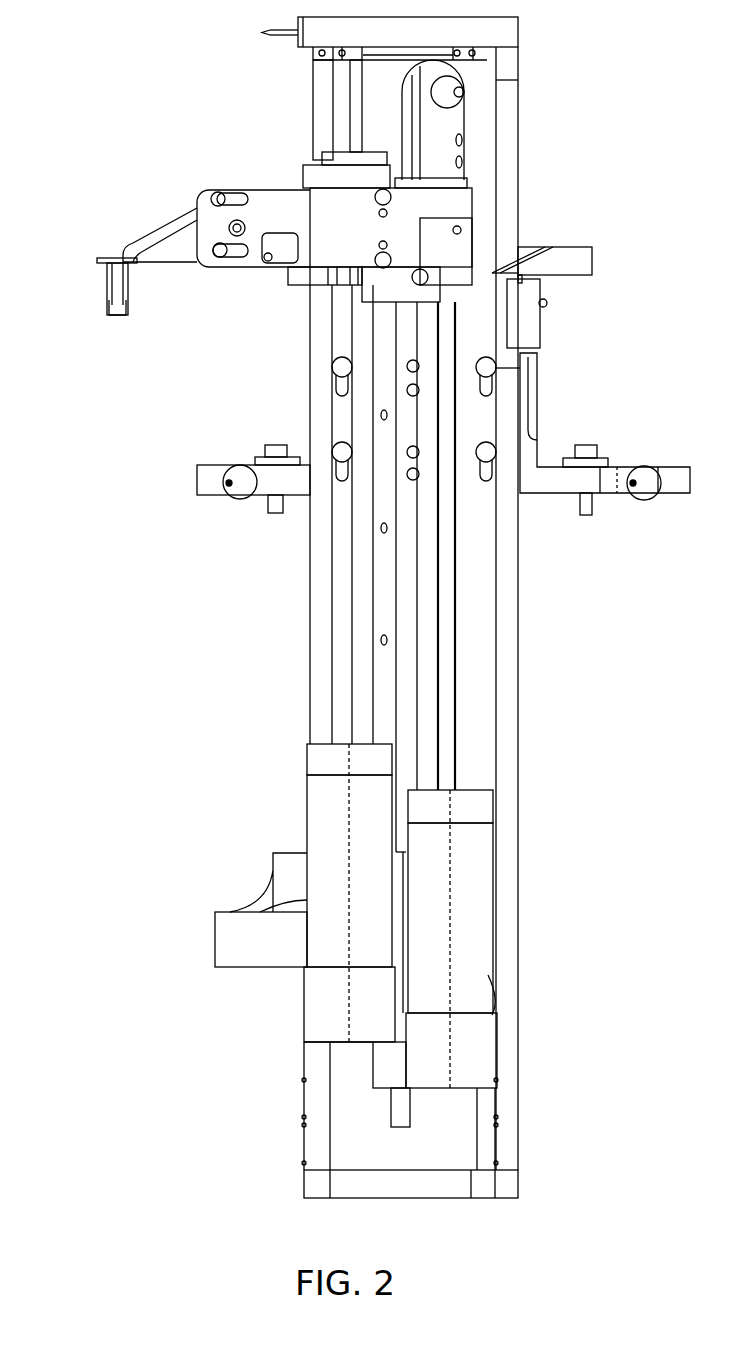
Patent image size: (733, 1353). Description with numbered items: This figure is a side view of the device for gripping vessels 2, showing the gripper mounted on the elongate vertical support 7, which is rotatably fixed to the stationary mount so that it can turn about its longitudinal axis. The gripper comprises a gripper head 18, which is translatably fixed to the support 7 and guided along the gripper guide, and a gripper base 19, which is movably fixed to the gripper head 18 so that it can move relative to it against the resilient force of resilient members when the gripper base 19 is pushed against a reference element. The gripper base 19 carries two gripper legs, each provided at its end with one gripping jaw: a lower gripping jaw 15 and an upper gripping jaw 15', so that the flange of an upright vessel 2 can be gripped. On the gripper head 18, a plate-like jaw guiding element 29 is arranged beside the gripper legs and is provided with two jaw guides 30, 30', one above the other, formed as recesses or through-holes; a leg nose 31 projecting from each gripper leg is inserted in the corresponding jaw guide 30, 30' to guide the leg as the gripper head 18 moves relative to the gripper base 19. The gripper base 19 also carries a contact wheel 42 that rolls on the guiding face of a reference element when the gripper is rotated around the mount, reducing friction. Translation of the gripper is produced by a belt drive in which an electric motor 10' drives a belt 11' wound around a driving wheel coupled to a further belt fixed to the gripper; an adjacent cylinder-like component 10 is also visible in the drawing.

The vessel 2 is at (110, 280).
The elongate vertical support 7 is at (470, 575).
The pneumatic cylinder 10 is at (494, 939).
The electric motor 10' is at (297, 893).
The belt 11' is at (498, 124).
The lower gripping jaw 15 is at (82, 229).
The upper gripping jaw 15' is at (127, 206).
The gripper head 18 is at (363, 177).
The gripper base 19 is at (333, 250).
The jaw guiding element 29 is at (275, 203).
The jaw guide 30 is at (241, 292).
The jaw guide 30' is at (221, 144).
The leg nose 31 is at (212, 198).
The contact wheel 42 is at (277, 262).